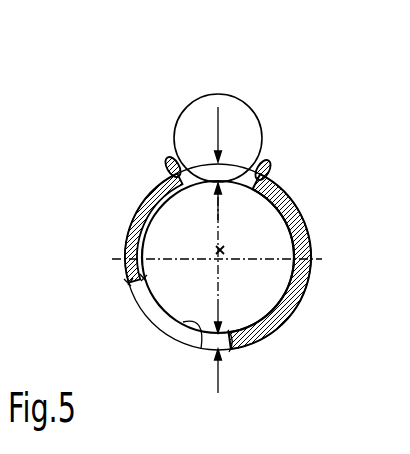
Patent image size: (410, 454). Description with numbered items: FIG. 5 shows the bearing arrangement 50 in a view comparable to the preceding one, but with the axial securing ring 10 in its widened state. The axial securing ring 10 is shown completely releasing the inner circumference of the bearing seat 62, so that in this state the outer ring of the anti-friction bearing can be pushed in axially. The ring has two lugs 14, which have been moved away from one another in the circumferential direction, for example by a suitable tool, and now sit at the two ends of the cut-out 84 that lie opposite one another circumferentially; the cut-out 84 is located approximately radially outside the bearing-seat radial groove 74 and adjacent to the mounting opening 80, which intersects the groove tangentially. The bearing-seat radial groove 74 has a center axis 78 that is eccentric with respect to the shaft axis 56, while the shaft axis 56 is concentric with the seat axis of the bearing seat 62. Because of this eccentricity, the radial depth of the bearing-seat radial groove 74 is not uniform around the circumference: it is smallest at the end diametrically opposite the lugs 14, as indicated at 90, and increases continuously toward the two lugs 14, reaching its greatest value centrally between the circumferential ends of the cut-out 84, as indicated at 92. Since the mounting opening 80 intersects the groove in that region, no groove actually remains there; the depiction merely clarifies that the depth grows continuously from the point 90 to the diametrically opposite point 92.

The axial securing ring 10 is at (308, 284).
The lugs 14 is at (170, 160).
The bearing arrangement 50 is at (0, 74).
The shaft axis 56 is at (222, 262).
The bearing seat 62 is at (200, 324).
The bearing-seat radial groove 74 is at (157, 318).
The center axis 78 is at (224, 250).
The mounting opening 80 is at (237, 135).
The cut-out 84 is at (166, 166).
The smallest radial depth 90 is at (216, 369).
The greatest radial depth 92 is at (215, 127).